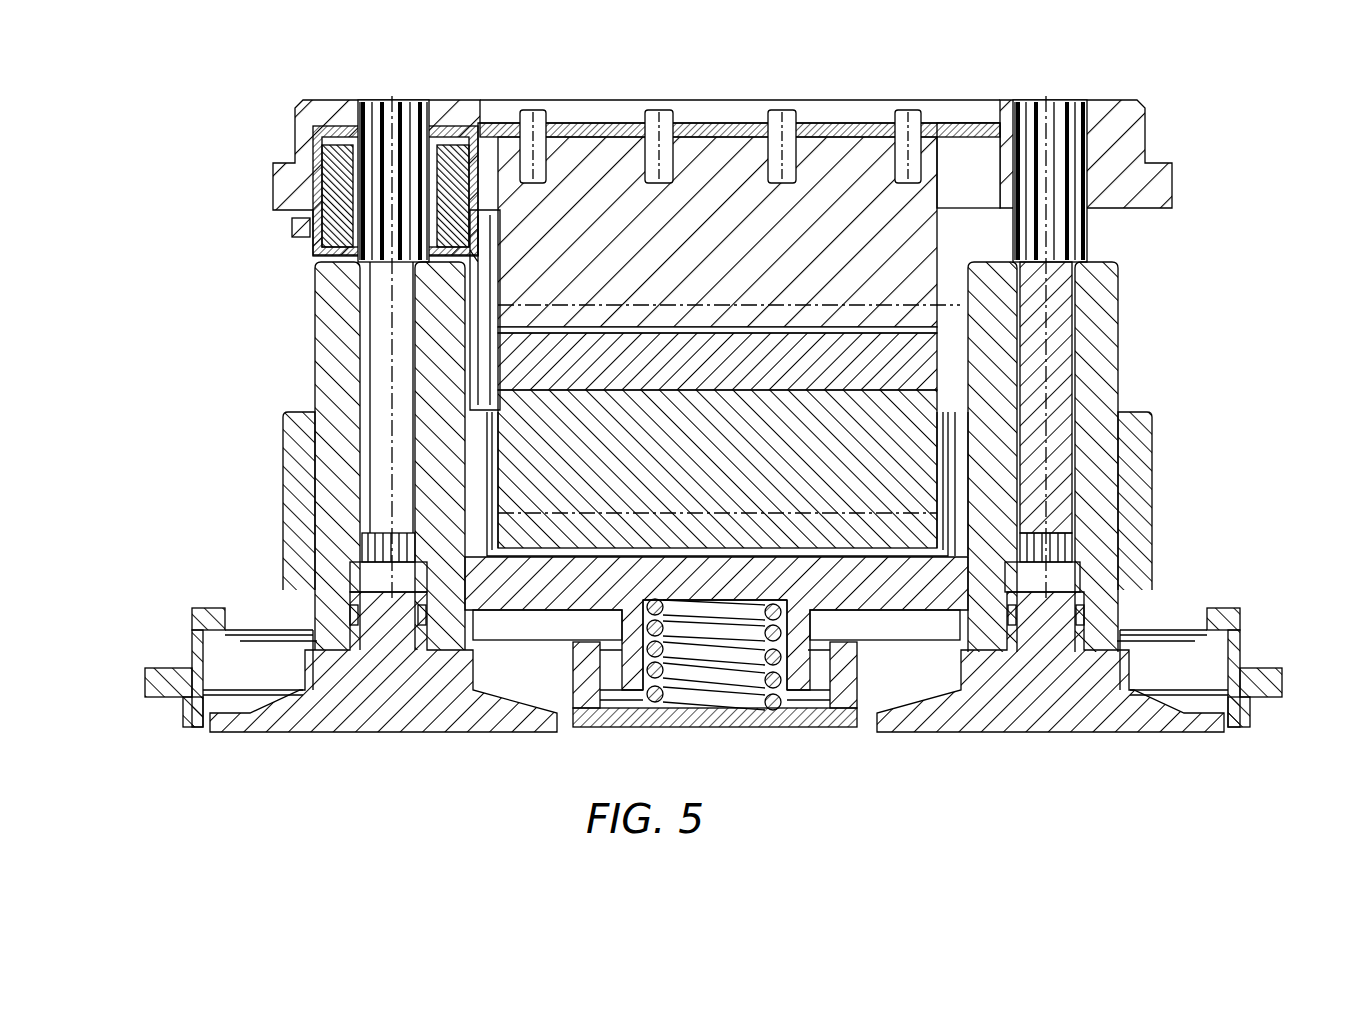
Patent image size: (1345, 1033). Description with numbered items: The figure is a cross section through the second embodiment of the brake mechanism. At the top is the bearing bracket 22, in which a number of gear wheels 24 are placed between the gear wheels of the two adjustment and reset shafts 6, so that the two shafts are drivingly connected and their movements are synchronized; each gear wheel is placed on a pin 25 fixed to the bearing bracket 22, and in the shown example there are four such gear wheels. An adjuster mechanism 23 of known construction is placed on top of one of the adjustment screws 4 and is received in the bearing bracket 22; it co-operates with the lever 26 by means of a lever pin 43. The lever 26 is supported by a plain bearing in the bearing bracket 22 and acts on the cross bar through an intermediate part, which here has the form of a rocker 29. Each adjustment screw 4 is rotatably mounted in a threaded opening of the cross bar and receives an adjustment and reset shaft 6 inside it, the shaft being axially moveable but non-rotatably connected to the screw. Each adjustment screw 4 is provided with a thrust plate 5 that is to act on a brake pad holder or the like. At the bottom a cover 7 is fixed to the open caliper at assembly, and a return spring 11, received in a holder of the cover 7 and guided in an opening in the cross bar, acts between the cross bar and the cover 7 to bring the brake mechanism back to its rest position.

The adjustment screw 4 is at (320, 285).
The thrust plate 5 is at (1065, 715).
The adjustment and reset shaft 6 is at (383, 355).
The cover 7 is at (1230, 614).
The return spring 11 is at (750, 680).
The bearing bracket 22 is at (840, 125).
The adjuster mechanism 23 is at (313, 136).
The gear wheel 24 is at (588, 127).
The pin 25 is at (545, 127).
The lever 26 is at (940, 356).
The rocker 29 is at (930, 462).
The lever pin 43 is at (497, 212).